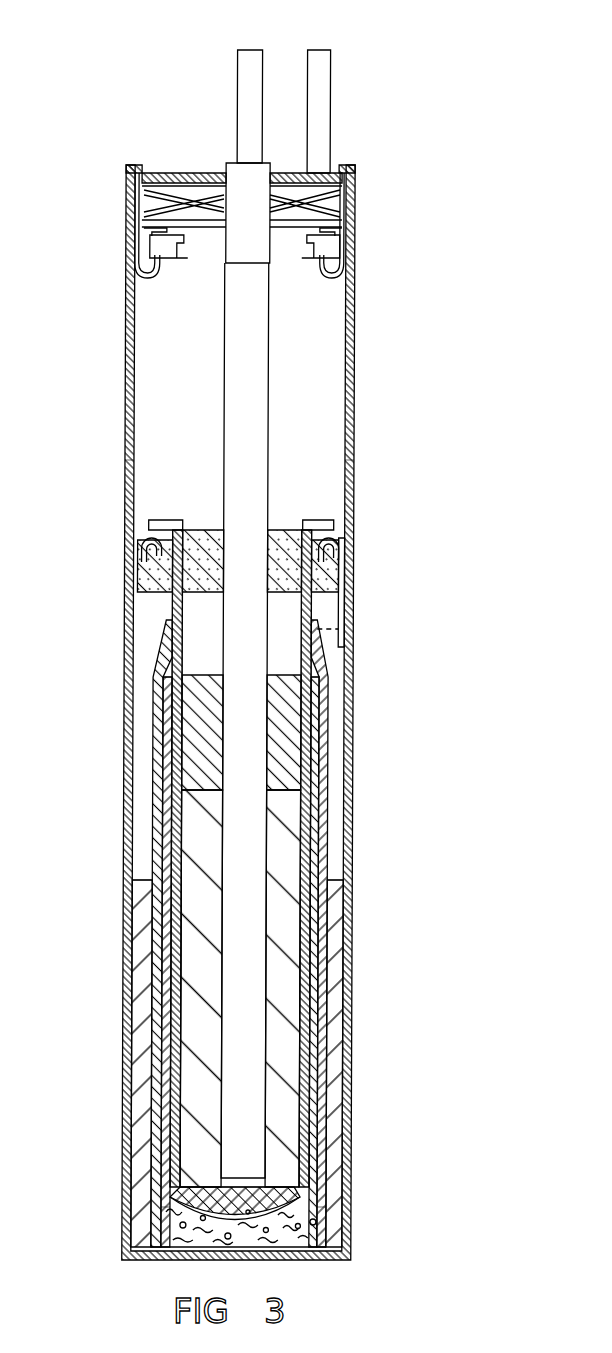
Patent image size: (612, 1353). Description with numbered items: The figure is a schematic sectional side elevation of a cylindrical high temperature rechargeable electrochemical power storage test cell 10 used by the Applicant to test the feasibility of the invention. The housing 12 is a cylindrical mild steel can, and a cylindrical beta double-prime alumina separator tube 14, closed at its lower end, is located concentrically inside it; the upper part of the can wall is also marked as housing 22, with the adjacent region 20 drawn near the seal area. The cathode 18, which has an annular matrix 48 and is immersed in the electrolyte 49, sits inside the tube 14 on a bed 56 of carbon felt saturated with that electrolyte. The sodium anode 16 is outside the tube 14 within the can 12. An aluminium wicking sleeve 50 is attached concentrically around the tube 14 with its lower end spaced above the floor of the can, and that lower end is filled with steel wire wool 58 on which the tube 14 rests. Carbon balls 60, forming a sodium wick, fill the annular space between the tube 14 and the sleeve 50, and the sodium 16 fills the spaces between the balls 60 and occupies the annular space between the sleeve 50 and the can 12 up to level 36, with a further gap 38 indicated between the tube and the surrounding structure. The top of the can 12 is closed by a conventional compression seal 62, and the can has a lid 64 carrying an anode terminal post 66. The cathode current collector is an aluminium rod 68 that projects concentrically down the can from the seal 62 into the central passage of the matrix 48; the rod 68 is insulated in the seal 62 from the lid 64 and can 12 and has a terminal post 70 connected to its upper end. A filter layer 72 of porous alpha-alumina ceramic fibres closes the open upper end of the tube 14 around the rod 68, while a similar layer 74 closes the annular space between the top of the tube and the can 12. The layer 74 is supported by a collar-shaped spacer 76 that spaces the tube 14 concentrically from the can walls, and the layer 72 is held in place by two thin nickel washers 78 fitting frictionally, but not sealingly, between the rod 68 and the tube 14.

The cell 10 is at (457, 88).
The housing 12 is at (353, 457).
The separator tube 14 is at (302, 1025).
The sodium anode 16 is at (335, 950).
The cathode 18 is at (290, 870).
The inner sleeve 20 is at (327, 612).
The housing 22 is at (323, 348).
The level 36 is at (152, 630).
The gap 38 is at (197, 674).
The annular matrix 48 is at (240, 988).
The electrolyte 49 is at (287, 720).
The aluminium wicking sleeve 50 is at (327, 1073).
The bed of carbon felt 56 is at (290, 1197).
The steel wire wool 58 is at (299, 1232).
The carbon balls 60 is at (313, 988).
The compression seal 62 is at (297, 266).
The lid 64 is at (192, 173).
The anode terminal post 66 is at (318, 107).
The aluminium rod 68 is at (248, 417).
The terminal post 70 is at (252, 70).
The filter layer 72 is at (291, 525).
The filter layer 74 is at (320, 573).
The collar-shaped spacer 76 is at (140, 549).
The nickel washers 78 is at (283, 592).